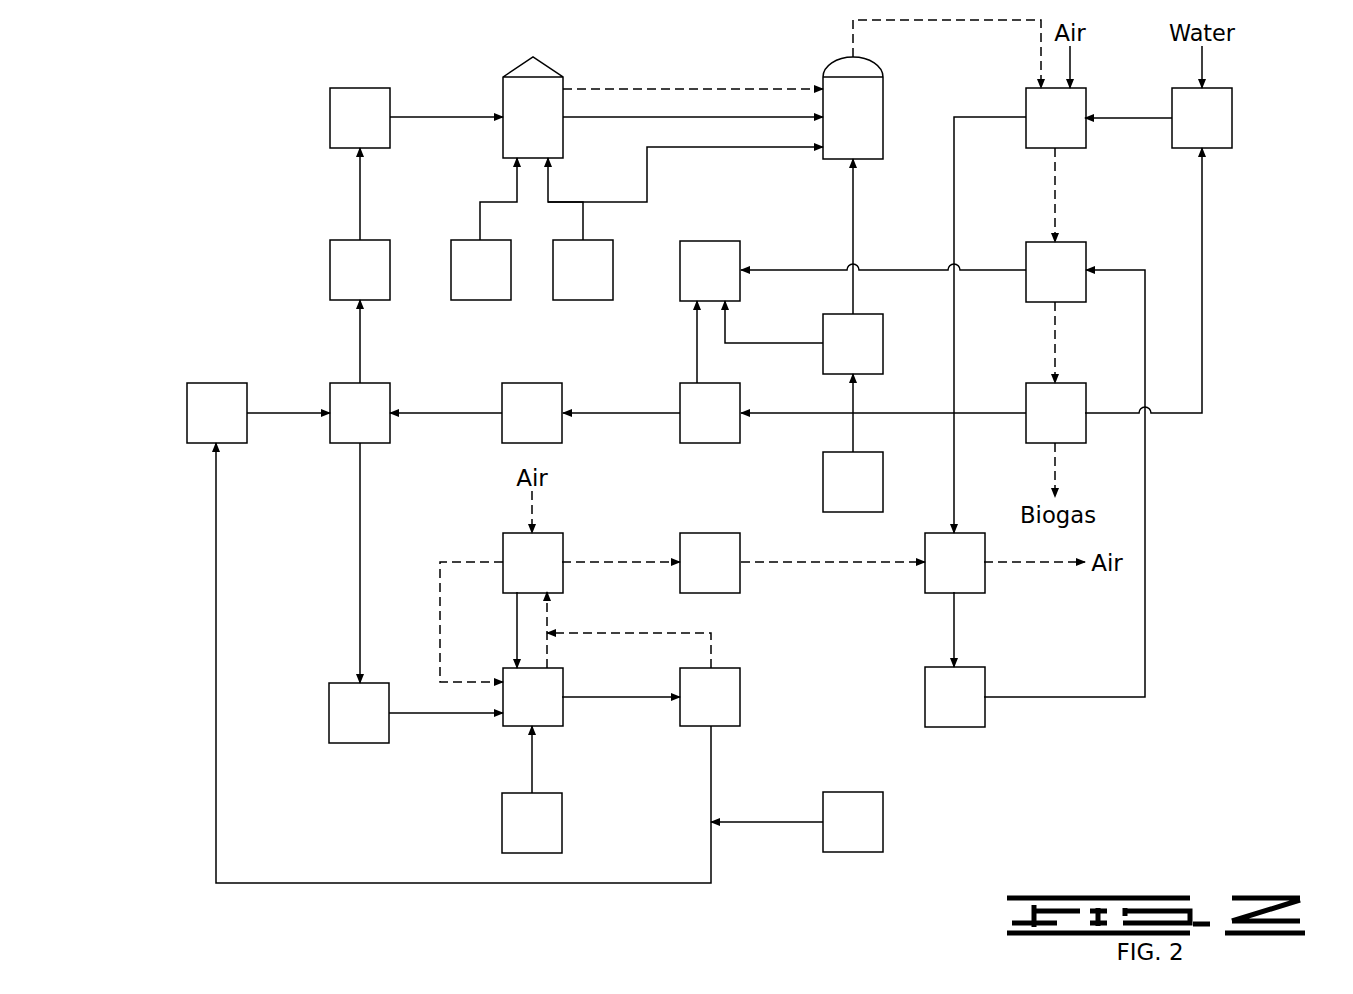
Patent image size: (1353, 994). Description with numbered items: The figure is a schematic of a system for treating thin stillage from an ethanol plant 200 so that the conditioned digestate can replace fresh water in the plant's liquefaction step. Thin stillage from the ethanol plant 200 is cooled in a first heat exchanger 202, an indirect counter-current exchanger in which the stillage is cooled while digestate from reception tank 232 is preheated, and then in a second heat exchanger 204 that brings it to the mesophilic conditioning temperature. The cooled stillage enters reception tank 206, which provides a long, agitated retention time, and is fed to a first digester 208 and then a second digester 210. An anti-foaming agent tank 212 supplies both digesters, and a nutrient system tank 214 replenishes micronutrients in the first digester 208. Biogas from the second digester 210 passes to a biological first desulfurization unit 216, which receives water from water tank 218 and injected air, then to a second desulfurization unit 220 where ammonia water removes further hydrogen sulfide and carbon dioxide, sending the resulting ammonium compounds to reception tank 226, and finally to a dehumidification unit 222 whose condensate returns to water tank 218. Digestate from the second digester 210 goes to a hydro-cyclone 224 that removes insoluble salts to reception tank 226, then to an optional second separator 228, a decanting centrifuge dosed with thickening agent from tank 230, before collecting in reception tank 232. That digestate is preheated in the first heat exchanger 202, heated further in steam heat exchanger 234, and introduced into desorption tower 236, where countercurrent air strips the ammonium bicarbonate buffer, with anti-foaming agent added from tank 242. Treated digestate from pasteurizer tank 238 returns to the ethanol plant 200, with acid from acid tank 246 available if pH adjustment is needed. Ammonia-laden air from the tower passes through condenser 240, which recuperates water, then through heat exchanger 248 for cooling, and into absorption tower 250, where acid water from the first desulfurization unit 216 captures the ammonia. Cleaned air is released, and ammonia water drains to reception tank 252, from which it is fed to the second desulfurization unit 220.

The ethanol plant 200 is at (187, 414).
The first heat exchanger 202 is at (343, 383).
The second heat exchanger 204 is at (330, 265).
The reception tank 206 is at (345, 88).
The first digester 208 is at (513, 72).
The second digester 210 is at (838, 74).
The anti-foaming agent tank 212 is at (580, 300).
The nutrient system tank 214 is at (470, 300).
The first desulfurization unit 216 is at (1026, 98).
The water tank 218 is at (1232, 109).
The second desulfurization unit 220 is at (1076, 242).
The dehumidification unit 222 is at (1037, 383).
The hydro-cyclone 224 is at (883, 339).
The reception tank 226 is at (710, 241).
The second separator 228 is at (693, 443).
The tank 230 is at (823, 481).
The reception tank 232 is at (520, 383).
The steam heat exchanger 234 is at (329, 711).
The desorption tower 236 is at (563, 717).
The pasteurizer tank 238 is at (740, 705).
The condenser 240 is at (503, 539).
The tank 242 is at (502, 821).
The acid tank 246 is at (883, 821).
The heat exchanger 248 is at (725, 592).
The absorption tower 250 is at (973, 592).
The reception tank 252 is at (963, 727).